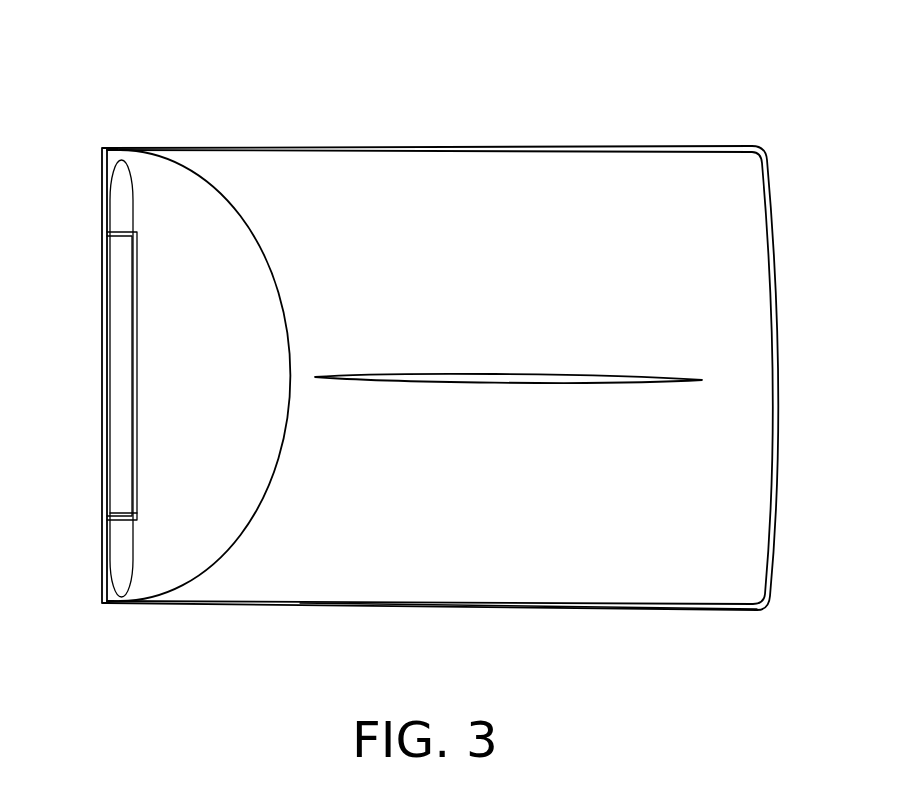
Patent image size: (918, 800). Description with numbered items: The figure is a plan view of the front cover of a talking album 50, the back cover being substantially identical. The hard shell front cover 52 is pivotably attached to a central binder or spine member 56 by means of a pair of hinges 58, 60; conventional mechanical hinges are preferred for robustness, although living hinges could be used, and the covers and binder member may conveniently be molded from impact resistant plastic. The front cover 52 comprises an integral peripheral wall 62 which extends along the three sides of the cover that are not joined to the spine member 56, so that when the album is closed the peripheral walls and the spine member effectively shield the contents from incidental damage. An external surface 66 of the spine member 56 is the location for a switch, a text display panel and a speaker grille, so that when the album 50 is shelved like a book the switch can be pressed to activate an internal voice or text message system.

The album 50 is at (694, 98).
The front cover 52 is at (683, 570).
The spine member 56 is at (117, 353).
The hinge 58 is at (94, 222).
The hinge 60 is at (94, 524).
The peripheral wall 62 is at (578, 608).
The external surface 66 is at (98, 292).